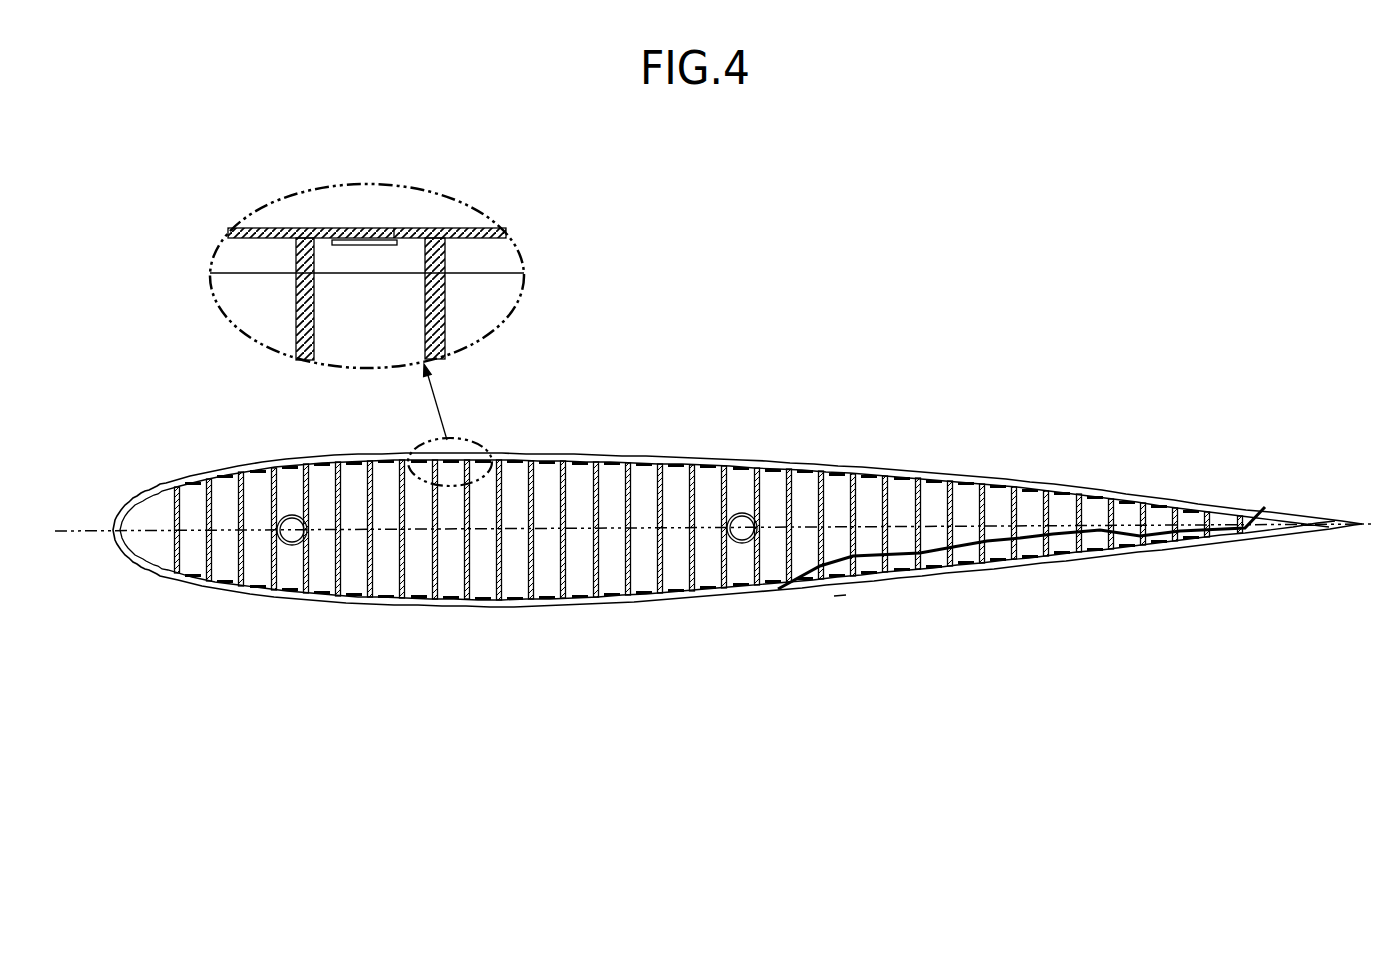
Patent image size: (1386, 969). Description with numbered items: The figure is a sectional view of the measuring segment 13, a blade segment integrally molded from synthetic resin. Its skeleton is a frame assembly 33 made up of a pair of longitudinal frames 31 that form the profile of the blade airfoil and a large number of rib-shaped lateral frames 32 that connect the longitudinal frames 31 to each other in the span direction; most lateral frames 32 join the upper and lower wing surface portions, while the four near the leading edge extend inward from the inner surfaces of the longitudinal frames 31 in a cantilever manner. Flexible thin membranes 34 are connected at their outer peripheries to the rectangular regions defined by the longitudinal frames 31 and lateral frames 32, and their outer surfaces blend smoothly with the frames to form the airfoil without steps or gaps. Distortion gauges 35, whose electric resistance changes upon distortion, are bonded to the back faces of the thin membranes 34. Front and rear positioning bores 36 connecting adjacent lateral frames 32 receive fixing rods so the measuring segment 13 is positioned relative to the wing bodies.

The measuring segment 13 is at (652, 425).
The longitudinal frames 31 is at (480, 250).
The lateral frames 32 is at (296, 284).
The frame assembly 33 is at (394, 226).
The thin membranes 34 is at (245, 228).
The distortion gauges 35 is at (365, 246).
The positioning bores 36 is at (303, 518).